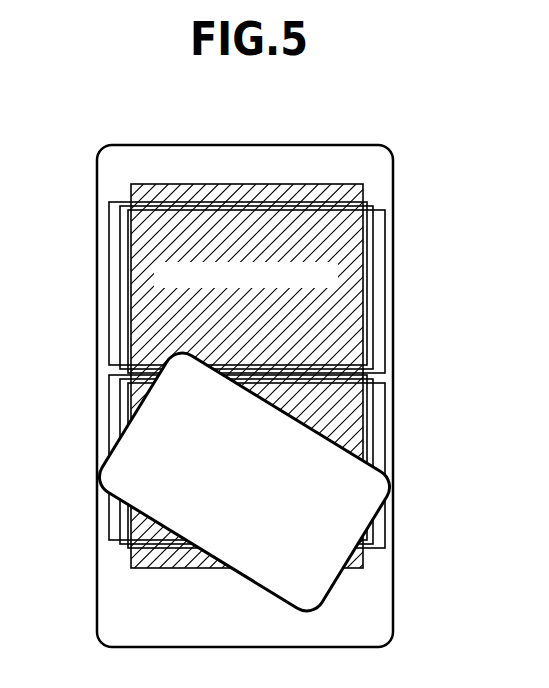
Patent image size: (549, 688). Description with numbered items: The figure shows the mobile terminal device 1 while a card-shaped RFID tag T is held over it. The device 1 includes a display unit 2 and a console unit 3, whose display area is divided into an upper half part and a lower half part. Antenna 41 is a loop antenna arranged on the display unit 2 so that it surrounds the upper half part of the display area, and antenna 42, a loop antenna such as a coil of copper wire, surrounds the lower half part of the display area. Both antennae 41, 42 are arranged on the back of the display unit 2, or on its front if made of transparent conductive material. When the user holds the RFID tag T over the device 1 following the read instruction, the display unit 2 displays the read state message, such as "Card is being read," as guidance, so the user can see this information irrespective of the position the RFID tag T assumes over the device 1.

The mobile terminal device 1 is at (391, 147).
The display unit 2 is at (274, 330).
The console unit 3 is at (235, 233).
The antenna 41 is at (108, 227).
The antenna 42 is at (108, 412).
The RFID tag T is at (330, 587).